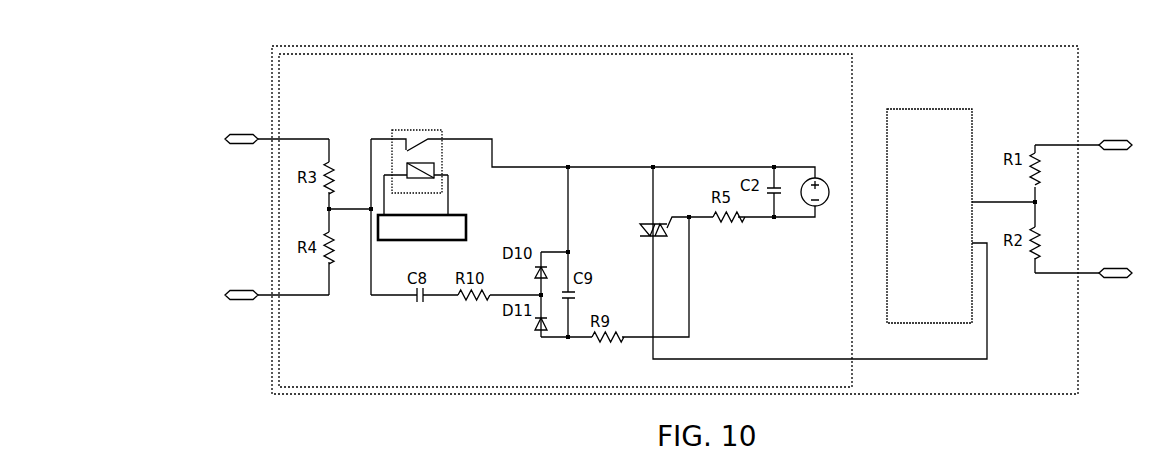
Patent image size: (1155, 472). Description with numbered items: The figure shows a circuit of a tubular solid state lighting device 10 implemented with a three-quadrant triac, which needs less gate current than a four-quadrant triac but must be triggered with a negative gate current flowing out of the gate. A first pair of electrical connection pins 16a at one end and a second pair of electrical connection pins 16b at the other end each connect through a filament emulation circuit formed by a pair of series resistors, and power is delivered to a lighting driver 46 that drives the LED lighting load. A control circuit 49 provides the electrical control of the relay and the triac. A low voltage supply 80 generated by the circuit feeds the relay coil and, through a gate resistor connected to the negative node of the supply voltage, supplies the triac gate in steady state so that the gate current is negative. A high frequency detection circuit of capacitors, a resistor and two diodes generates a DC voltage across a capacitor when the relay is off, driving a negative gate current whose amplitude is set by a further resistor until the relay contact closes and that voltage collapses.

The tubular solid state lighting device 10 is at (1078, 335).
The first pair of electrical connection pins 16a is at (258, 319).
The second pair of electrical connection pins 16b is at (1112, 108).
The lighting driver 46 is at (920, 108).
The control circuit 49 is at (466, 228).
The low voltage supply 80 is at (828, 207).